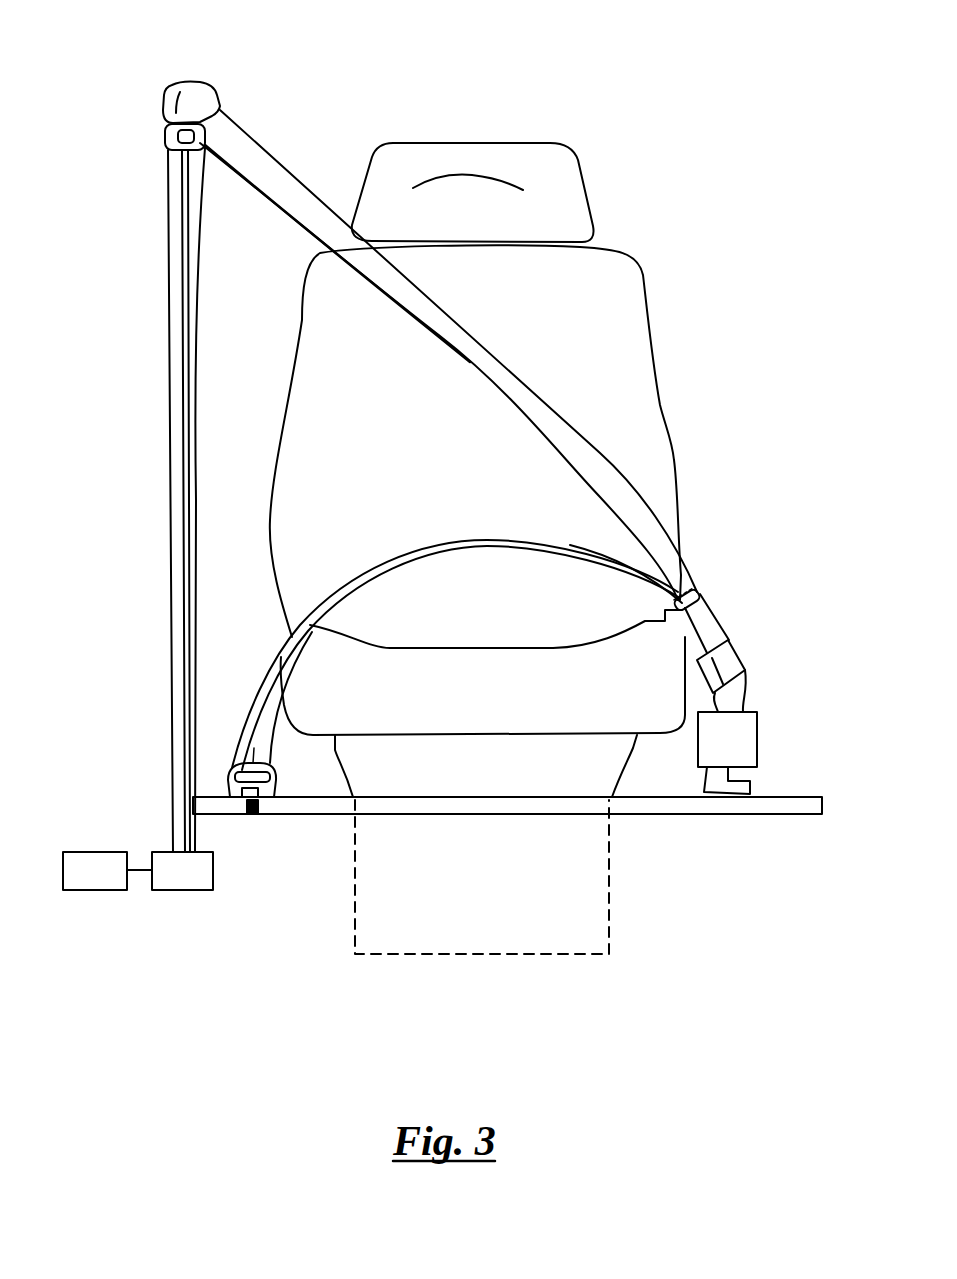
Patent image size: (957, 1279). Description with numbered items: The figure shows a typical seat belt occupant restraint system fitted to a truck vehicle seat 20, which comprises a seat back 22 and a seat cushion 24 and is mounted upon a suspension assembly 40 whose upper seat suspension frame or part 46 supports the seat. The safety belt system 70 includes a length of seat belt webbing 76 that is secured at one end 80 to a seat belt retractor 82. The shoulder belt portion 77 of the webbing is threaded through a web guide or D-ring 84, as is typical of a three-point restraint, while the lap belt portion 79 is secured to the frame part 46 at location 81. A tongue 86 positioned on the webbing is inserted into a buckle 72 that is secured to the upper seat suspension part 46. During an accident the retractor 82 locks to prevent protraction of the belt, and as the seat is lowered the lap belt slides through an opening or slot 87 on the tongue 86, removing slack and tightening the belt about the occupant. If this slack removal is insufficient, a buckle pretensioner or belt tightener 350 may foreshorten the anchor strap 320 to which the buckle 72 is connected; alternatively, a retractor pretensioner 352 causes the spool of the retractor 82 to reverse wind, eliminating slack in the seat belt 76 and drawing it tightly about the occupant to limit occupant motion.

The vehicle seat 20 is at (530, 133).
The seat back 22 is at (639, 328).
The seat cushion 24 is at (580, 709).
The safety belt system 70 is at (108, 256).
The buckle 72 is at (742, 658).
The seat belt webbing 76 is at (466, 387).
The shoulder belt portion 77 is at (491, 362).
The lap belt portion 79 is at (426, 546).
The end of seat belt webbing 80 is at (173, 800).
The lap belt securing location 81 is at (222, 808).
The seat belt retractor 82 is at (193, 883).
The web guide or D-ring 84 is at (198, 83).
The tongue 86 is at (702, 598).
The opening or slot 87 is at (699, 590).
The anchor strap 320 is at (747, 698).
The buckle pretensioner or belt tightener 350 is at (763, 738).
The retractor pretensioner 352 is at (103, 880).
The suspension assembly 40 is at (587, 900).
The upper seat suspension frame or part 46 is at (314, 808).